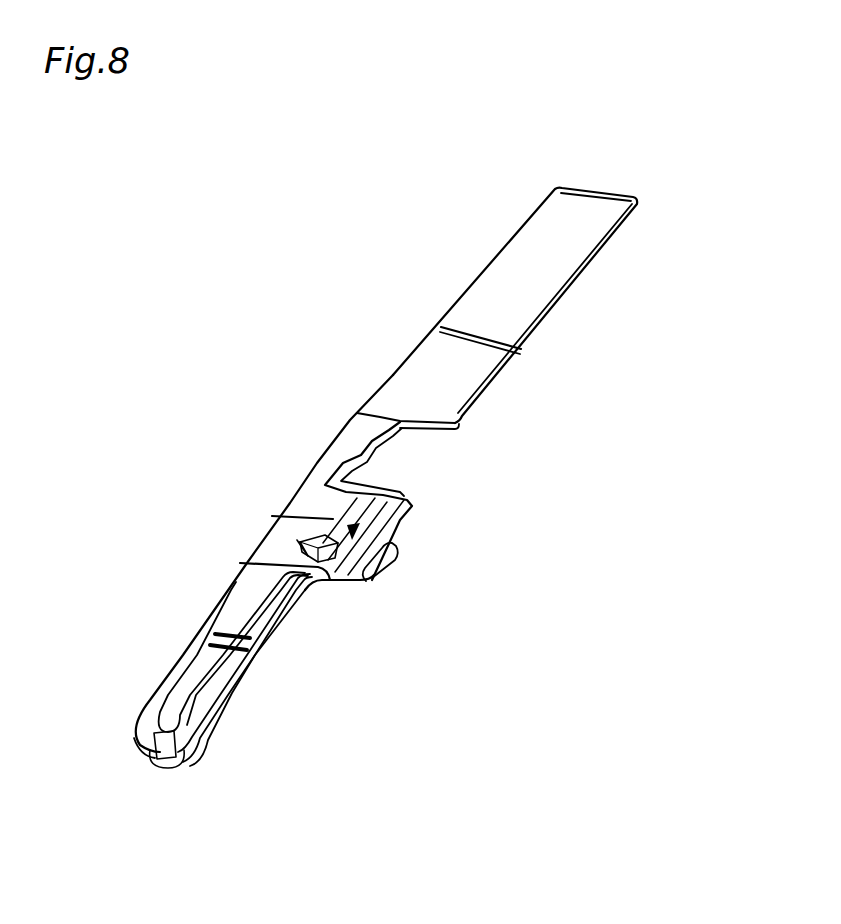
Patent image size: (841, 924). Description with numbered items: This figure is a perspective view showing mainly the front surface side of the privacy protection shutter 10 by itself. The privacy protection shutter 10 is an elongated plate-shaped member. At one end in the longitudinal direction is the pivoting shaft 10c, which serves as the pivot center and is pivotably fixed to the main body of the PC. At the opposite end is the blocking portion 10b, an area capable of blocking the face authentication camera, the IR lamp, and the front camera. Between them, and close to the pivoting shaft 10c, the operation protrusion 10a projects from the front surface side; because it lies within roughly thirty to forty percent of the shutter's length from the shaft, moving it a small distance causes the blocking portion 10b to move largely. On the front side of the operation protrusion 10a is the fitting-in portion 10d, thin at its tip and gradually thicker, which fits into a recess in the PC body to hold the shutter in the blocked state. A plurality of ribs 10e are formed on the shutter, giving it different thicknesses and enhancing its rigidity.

The privacy protection shutter 10 is at (423, 237).
The operation protrusion 10a is at (341, 548).
The blocking portion 10b is at (546, 286).
The pivoting shaft 10c is at (173, 762).
The fitting-in portion 10d is at (395, 566).
The ribs 10e is at (634, 194).